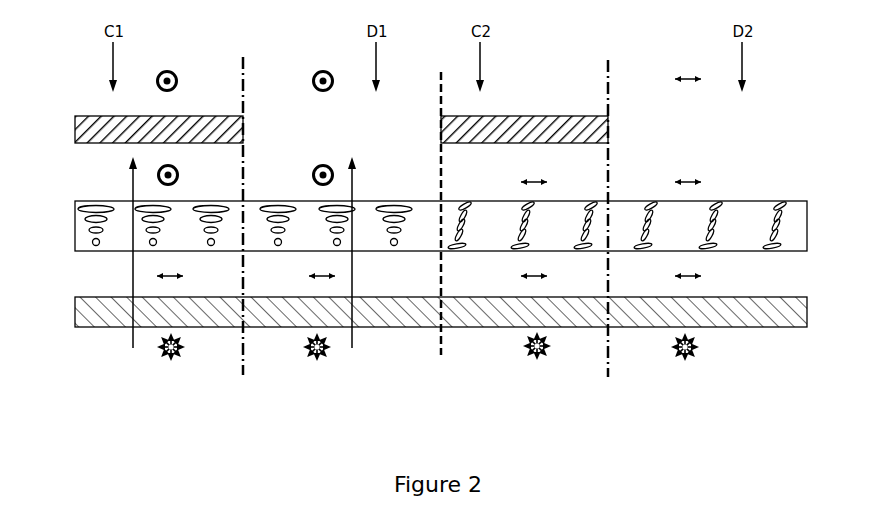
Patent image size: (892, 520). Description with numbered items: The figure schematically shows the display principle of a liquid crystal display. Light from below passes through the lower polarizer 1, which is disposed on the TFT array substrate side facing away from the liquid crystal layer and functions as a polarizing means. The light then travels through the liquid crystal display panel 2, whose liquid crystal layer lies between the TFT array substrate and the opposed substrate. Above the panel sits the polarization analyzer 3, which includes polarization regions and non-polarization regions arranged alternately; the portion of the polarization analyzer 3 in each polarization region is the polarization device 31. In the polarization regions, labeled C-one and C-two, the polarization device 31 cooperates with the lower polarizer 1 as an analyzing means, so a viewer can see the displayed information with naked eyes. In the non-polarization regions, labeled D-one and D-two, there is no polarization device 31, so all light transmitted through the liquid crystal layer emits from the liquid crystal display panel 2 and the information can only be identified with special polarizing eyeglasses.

The lower polarizer 1 is at (790, 313).
The liquid crystal display panel 2 is at (800, 223).
The polarization analyzer 3 is at (450, 122).
The polarization device 31 is at (96, 120).